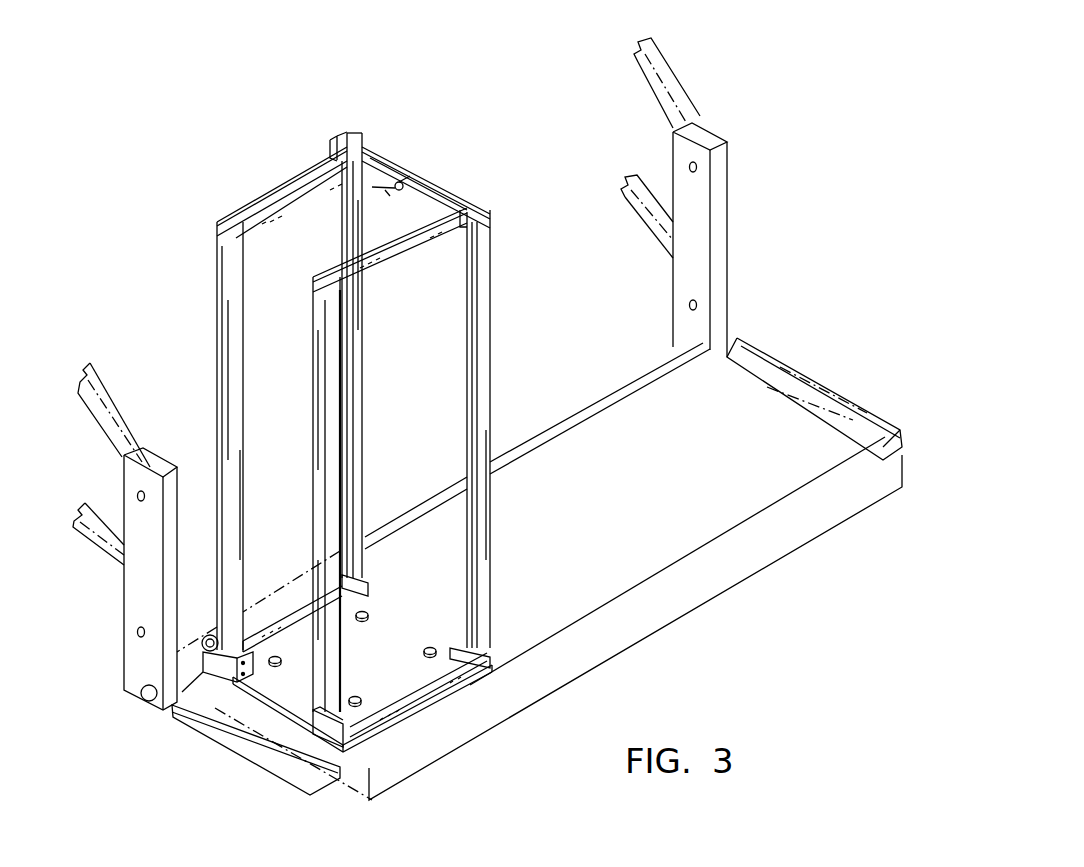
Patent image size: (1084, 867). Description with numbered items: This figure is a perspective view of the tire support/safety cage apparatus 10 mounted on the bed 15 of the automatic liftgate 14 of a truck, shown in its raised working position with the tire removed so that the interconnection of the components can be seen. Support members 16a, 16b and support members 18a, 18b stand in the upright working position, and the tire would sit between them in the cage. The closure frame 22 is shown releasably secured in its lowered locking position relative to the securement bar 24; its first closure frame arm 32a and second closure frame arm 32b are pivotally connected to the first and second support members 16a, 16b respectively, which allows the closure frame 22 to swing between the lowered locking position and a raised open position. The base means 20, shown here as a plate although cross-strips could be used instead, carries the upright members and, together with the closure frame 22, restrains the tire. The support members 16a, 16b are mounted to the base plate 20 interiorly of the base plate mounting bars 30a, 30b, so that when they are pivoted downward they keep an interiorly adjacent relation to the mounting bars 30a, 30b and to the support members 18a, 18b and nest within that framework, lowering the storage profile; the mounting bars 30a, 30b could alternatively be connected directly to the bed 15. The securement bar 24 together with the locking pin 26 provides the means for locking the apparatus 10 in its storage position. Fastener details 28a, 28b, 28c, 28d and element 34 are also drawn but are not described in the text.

The tire support/safety cage apparatus 10 is at (534, 160).
The liftgate 14 is at (798, 343).
The bed 15 is at (630, 533).
The first support member 16a is at (223, 385).
The second support member 16b is at (320, 463).
The support member 18a is at (360, 368).
The support member 18b is at (487, 373).
The base means 20 is at (367, 670).
The closure frame 22 is at (283, 188).
The securement bar 24 is at (500, 207).
The locking pin 26 is at (404, 170).
The fastener 28a is at (271, 664).
The fastener 28b is at (358, 703).
The fastener 28c is at (433, 655).
The fastener 28d is at (368, 607).
The base plate mounting bar 30a is at (287, 613).
The base plate mounting bar 30b is at (405, 670).
The first closure frame arm 32a is at (258, 207).
The second closure frame arm 32b is at (394, 253).
The rear top rail 34 is at (430, 188).